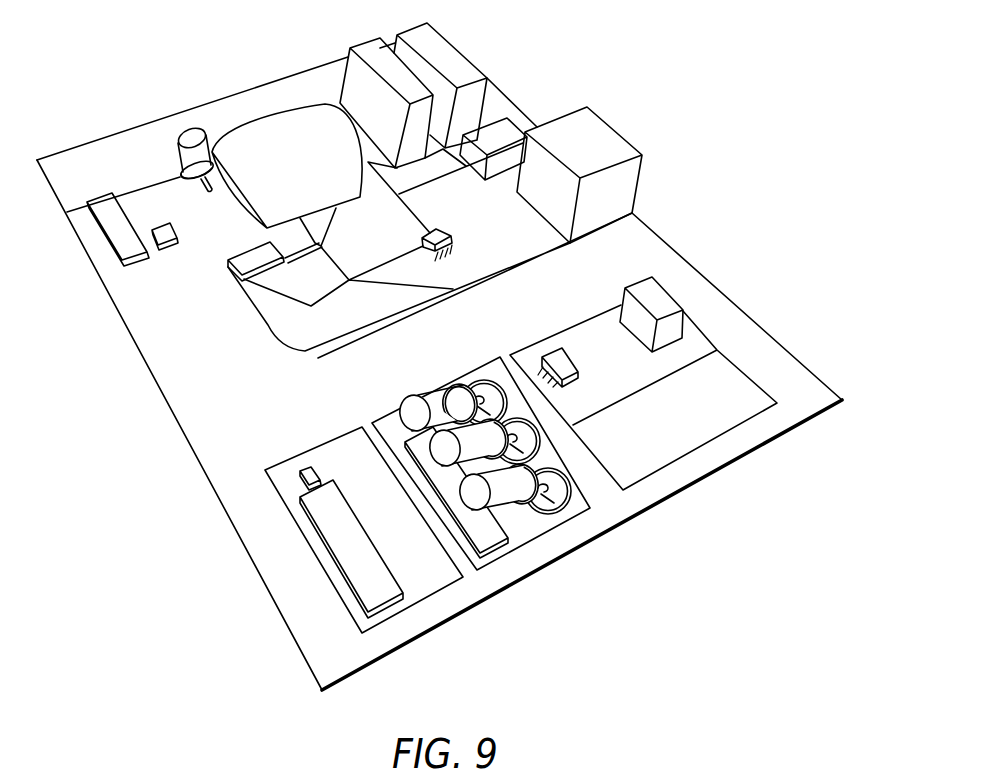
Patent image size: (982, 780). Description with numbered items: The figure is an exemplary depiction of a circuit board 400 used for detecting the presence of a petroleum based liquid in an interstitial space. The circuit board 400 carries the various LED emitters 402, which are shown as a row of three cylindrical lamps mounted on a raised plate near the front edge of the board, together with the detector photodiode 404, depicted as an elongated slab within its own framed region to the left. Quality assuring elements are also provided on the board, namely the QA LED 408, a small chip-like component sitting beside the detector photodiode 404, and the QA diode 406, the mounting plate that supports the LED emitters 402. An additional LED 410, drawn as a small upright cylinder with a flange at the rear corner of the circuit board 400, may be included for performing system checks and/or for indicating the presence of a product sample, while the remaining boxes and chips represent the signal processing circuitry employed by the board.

The circuit board 400 is at (636, 48).
The LED emitters 402 is at (516, 495).
The detector photodiode 404 is at (340, 543).
The QA diode 406 is at (490, 533).
The QA LED 408 is at (310, 482).
The additional LED 410 is at (190, 133).